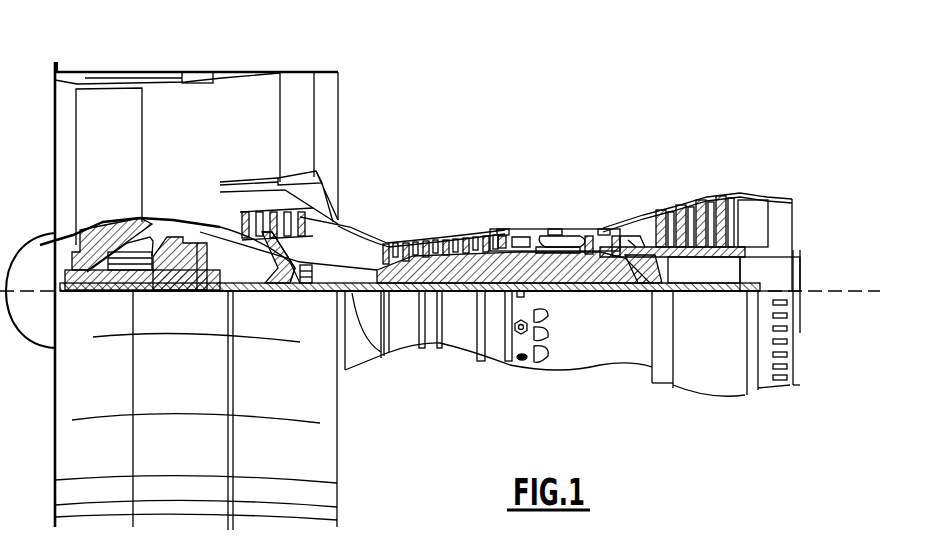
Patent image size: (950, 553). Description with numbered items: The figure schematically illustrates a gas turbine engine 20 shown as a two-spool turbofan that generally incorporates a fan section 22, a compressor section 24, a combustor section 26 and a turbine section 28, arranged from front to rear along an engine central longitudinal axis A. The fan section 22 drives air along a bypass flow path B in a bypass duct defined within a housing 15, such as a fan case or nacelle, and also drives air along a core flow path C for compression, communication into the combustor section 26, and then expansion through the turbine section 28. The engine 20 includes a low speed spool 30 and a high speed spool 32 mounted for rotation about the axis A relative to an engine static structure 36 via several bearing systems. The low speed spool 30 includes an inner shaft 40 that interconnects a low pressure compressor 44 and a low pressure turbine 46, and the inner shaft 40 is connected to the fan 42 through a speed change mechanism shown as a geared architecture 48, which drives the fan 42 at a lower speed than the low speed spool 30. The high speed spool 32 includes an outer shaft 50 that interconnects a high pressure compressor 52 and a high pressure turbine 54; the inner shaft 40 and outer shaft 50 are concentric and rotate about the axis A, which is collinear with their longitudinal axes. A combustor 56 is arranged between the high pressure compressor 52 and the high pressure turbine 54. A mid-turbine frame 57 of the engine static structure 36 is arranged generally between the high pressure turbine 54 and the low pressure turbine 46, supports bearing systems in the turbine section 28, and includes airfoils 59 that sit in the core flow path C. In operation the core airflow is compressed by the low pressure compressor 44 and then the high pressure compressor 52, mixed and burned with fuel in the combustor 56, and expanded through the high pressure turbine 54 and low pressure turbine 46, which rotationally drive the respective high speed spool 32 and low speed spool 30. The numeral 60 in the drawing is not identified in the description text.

The gas turbine engine 20 is at (553, 110).
The fan section 22 is at (140, 65).
The housing 15 is at (198, 73).
The compressor section 24 is at (425, 222).
The combustor section 26 is at (555, 206).
The turbine section 28 is at (700, 222).
The low speed spool 30 is at (460, 300).
The high speed spool 32 is at (495, 243).
The engine static structure 36 is at (493, 367).
The inner shaft 40 is at (352, 360).
The fan 42 is at (128, 171).
The low pressure compressor 44 is at (305, 213).
The low pressure turbine 46 is at (702, 197).
The geared architecture 48 is at (200, 291).
The outer shaft 50 is at (550, 277).
The high pressure compressor 52 is at (436, 268).
The high pressure turbine 54 is at (612, 226).
The combustor 56 is at (552, 245).
The mid-turbine frame 57 is at (645, 212).
The airfoils 59 is at (657, 257).
The core airflow path 60 is at (658, 210).
The engine central longitudinal axis A is at (860, 291).
The bypass flow path B is at (172, 130).
The core flow path C is at (200, 212).